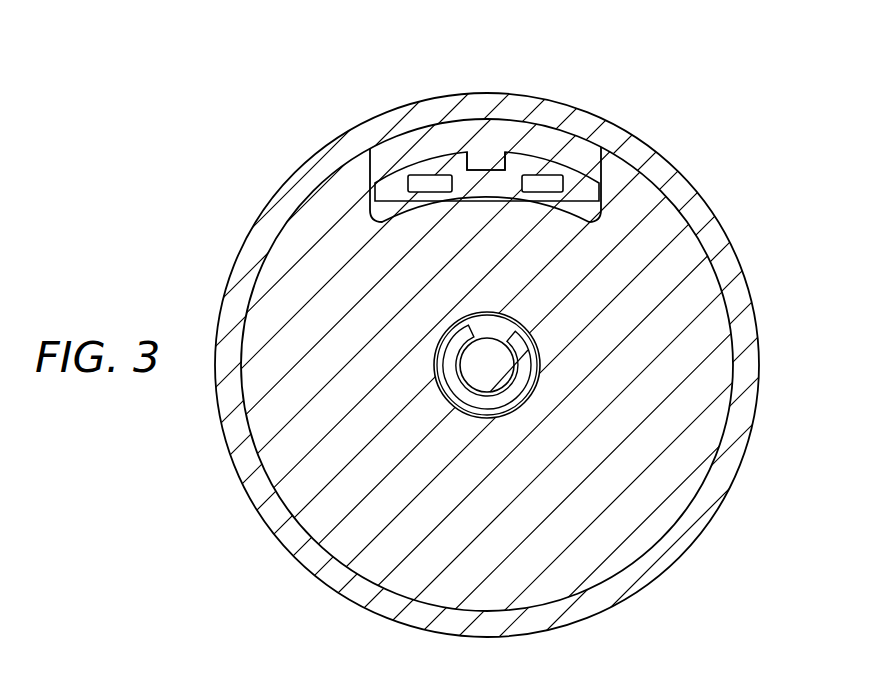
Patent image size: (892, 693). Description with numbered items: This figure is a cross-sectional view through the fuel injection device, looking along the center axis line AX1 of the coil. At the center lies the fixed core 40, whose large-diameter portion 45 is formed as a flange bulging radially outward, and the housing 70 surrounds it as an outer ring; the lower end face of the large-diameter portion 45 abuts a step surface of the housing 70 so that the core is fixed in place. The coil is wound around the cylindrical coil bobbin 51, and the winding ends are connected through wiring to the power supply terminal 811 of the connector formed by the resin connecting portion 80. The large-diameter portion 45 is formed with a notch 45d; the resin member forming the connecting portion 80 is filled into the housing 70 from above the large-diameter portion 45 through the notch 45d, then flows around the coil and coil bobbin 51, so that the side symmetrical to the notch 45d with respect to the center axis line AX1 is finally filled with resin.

The fixed core 40 is at (735, 290).
The large-diameter portion 45 is at (666, 467).
The notch 45d is at (488, 198).
The coil bobbin 51 is at (522, 153).
The housing 70 is at (287, 552).
The connecting portion 80 is at (392, 148).
The power supply terminal 811 is at (433, 183).
The center axis line AX1 is at (488, 368).